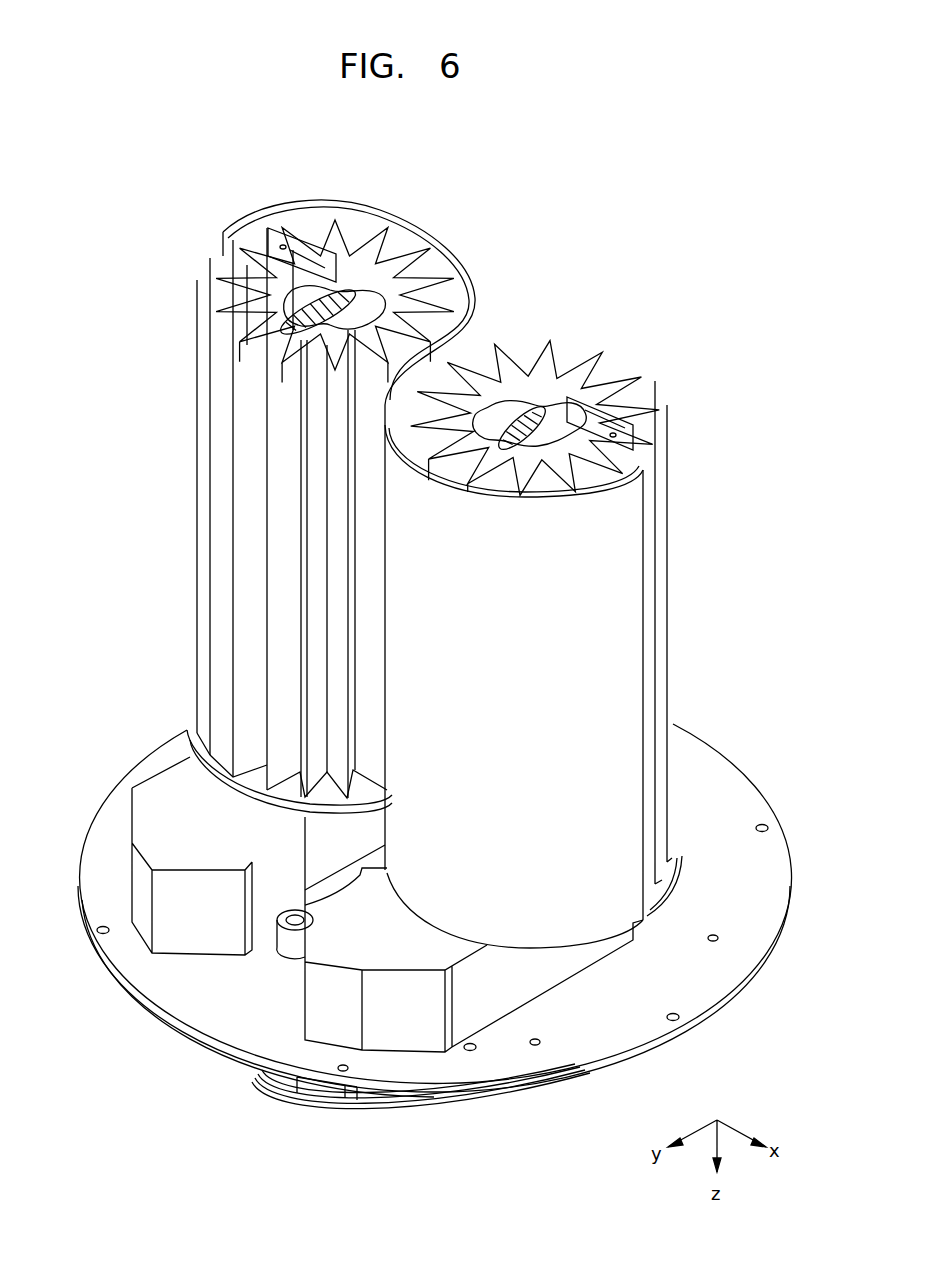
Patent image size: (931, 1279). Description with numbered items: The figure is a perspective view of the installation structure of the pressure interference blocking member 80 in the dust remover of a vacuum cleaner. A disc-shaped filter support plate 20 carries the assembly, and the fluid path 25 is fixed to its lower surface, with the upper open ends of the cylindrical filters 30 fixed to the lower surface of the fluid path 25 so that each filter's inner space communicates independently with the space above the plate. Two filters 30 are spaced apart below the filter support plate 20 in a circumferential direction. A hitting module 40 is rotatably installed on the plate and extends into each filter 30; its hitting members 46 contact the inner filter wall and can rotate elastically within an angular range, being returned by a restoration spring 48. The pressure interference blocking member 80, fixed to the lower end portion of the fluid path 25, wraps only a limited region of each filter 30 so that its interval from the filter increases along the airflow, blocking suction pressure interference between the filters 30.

The filter support plate 20 is at (737, 798).
The fluid path 25 is at (322, 1010).
The filter 30 is at (197, 282).
The hitting module 40 is at (300, 238).
The hitting member 46 is at (268, 238).
The restoration spring 48 is at (350, 300).
The pressure interference blocking member 80 is at (446, 255).